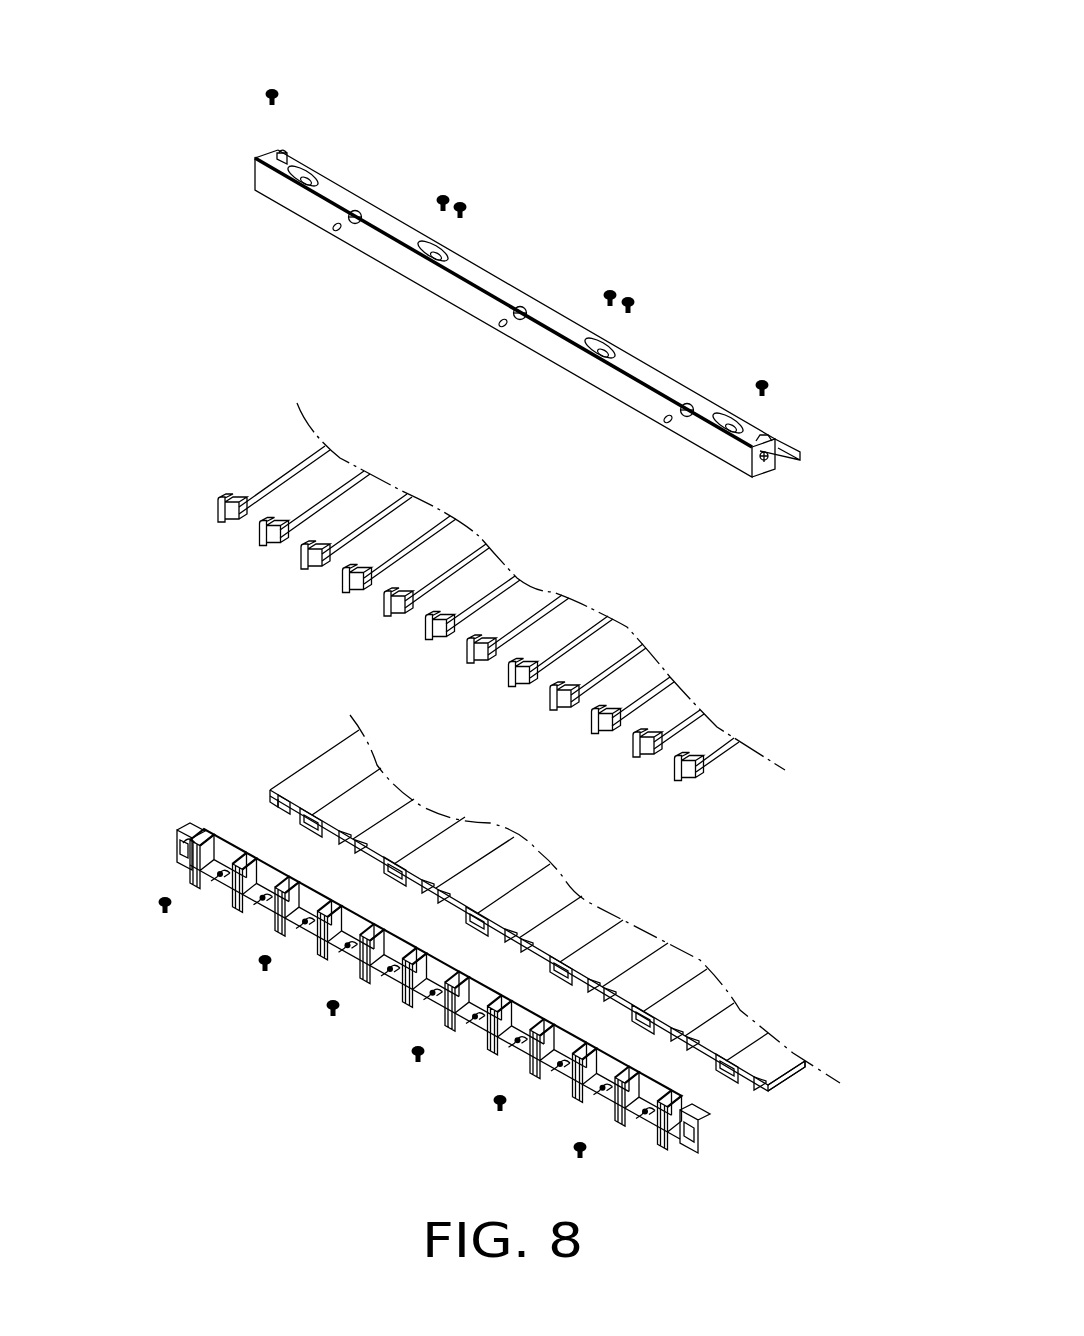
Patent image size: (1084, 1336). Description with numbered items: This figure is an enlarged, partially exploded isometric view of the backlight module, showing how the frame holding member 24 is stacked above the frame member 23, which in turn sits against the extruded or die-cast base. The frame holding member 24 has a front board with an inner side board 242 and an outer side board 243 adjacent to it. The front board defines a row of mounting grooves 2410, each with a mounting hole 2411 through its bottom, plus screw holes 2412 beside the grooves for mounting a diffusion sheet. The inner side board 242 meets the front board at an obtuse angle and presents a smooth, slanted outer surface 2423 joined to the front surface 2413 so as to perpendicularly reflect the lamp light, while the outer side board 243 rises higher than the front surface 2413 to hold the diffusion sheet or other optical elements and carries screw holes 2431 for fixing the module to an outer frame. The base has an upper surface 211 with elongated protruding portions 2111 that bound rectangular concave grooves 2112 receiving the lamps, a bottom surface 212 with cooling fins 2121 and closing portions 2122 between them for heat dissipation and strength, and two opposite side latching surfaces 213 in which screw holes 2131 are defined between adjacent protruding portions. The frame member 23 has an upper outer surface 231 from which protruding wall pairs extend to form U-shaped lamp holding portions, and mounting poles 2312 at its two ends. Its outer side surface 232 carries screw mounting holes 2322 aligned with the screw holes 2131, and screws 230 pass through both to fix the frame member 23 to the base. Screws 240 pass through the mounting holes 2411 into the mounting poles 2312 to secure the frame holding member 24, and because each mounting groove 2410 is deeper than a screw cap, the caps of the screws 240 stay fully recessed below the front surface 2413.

The frame holding member 24 is at (575, 313).
The screws 240 is at (270, 88).
The mounting grooves 2410 is at (318, 172).
The mounting hole 2411 is at (767, 462).
The screw holes 2412 is at (522, 285).
The front surface 2413 is at (662, 372).
The inner side board 242 is at (797, 450).
The outer surface 2423 is at (796, 437).
The outer side board 243 is at (552, 370).
The screw holes 2431 is at (497, 326).
The upper surface 211 is at (534, 776).
The elongated protruding portions 2111 is at (578, 893).
The concave grooves 2112 is at (598, 925).
The bottom surface 212 is at (802, 1068).
The side latching surfaces 213 is at (713, 1064).
The screw holes 2131 is at (310, 808).
The cooling fins 2121 is at (286, 797).
The closing portions 2122 is at (274, 794).
The frame member 23 is at (395, 955).
The screws 230 is at (320, 1010).
The upper outer surface 231 is at (228, 876).
The outer side surface 232 is at (180, 858).
The mounting poles 2312 is at (190, 830).
The screw mounting holes 2322 is at (388, 972).